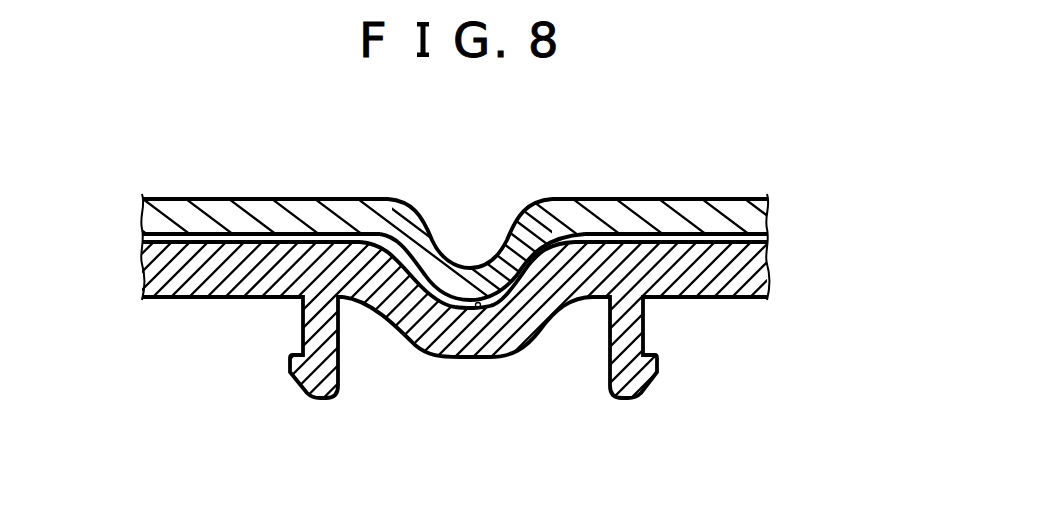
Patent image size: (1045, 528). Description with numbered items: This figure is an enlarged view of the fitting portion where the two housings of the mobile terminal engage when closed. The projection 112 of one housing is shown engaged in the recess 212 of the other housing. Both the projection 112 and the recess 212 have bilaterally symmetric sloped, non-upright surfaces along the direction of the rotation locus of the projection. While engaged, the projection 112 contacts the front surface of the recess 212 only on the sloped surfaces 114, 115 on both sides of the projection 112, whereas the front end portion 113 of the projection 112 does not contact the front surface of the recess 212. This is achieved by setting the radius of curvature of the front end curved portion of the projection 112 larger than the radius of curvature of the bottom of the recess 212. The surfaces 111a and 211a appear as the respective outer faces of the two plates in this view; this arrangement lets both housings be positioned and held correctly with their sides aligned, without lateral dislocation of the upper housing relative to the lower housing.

The surface of first plate 111a is at (725, 194).
The projection 112 is at (450, 273).
The front end portion 113 is at (465, 300).
The sloped surface 114 is at (408, 294).
The sloped surface 115 is at (540, 284).
The surface of second plate 211a is at (732, 300).
The recess 212 is at (480, 308).